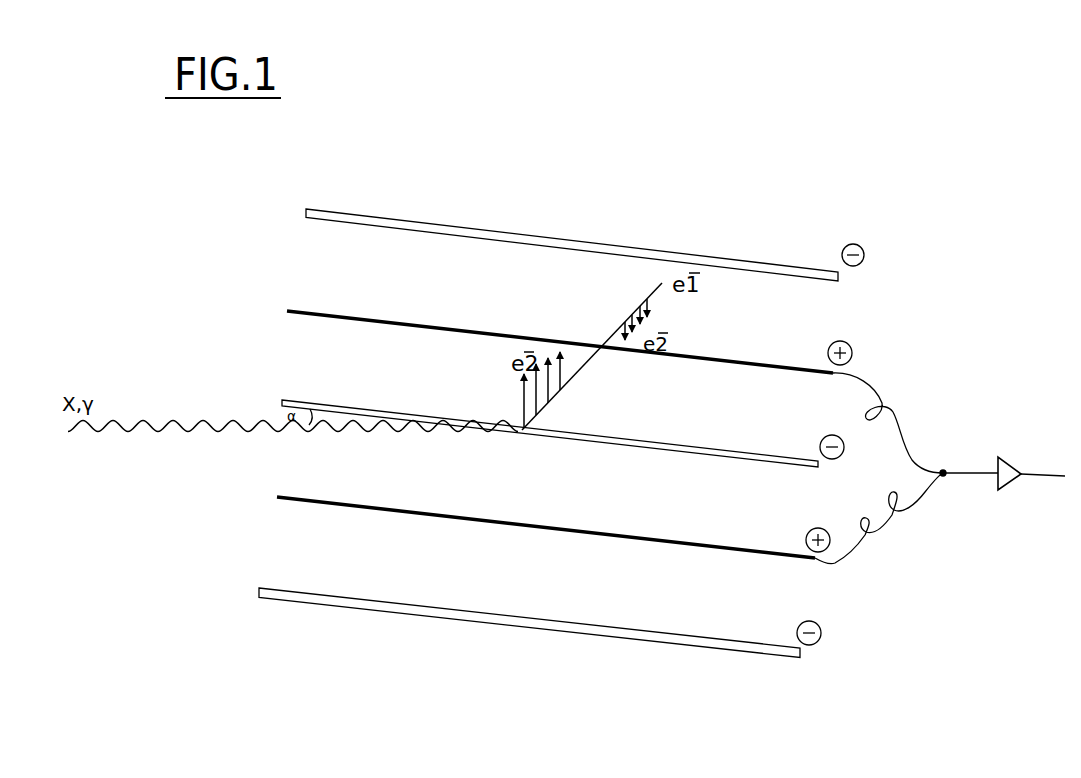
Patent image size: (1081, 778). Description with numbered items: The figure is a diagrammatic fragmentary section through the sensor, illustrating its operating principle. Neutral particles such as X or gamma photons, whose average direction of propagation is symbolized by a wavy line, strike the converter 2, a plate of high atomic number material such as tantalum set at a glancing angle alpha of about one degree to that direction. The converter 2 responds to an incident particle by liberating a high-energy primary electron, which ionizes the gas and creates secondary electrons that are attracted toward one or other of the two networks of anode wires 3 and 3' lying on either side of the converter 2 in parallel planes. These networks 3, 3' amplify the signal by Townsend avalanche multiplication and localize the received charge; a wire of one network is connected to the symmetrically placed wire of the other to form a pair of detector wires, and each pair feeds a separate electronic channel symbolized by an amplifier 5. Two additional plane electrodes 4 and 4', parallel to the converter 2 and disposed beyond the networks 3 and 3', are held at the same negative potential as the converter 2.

The converter 2 is at (700, 447).
The network of conductive wires 3 is at (546, 527).
The network of conductive wires 3' is at (560, 342).
The additional plane electrode 4 is at (529, 623).
The additional plane electrode 4' is at (572, 239).
The amplifier 5 is at (1010, 469).